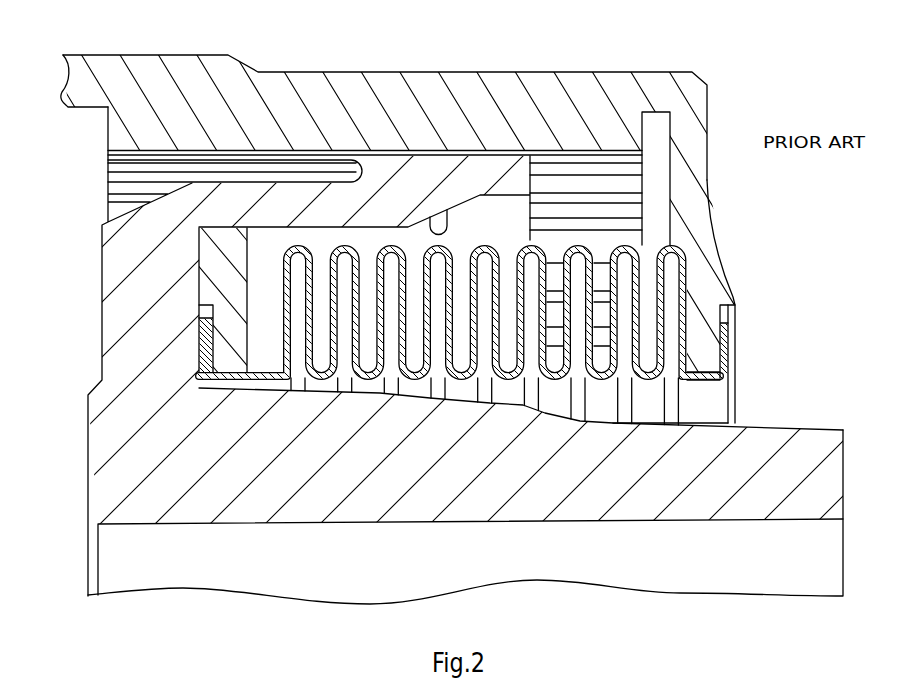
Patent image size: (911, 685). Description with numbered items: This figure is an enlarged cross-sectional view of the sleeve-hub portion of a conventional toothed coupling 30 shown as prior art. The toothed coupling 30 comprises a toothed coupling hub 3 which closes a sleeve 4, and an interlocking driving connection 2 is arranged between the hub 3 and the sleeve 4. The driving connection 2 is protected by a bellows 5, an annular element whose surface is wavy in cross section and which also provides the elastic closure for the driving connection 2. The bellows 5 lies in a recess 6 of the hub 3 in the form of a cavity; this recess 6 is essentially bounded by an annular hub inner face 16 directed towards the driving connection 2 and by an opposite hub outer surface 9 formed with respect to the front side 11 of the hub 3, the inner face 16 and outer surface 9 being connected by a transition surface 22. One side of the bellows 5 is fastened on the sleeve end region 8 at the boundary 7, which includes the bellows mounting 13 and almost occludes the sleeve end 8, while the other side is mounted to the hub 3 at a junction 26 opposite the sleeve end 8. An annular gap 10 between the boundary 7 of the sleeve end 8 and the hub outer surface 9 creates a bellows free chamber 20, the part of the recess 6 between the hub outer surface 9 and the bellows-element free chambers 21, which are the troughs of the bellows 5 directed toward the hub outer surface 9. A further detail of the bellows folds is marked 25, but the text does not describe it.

The driving connection 2 is at (372, 165).
The toothed coupling hub 3 is at (137, 341).
The sleeve 4 is at (692, 72).
The bellows 5 is at (489, 222).
The recess 6 is at (392, 232).
The boundary 7 is at (705, 358).
The sleeve end region 8 is at (728, 280).
The hub outer surface 9 is at (740, 428).
The annular gap 10 is at (703, 406).
The front side 11 is at (844, 480).
The bellows mounting 13 is at (718, 379).
The hub inner face 16 is at (442, 220).
The bellows free chamber 20 is at (513, 390).
The bellows-element free chambers 21 is at (487, 259).
The transition surface 22 is at (200, 295).
The fold 25 is at (484, 327).
The junction 26 is at (200, 335).
The toothed coupling 30 is at (795, 92).